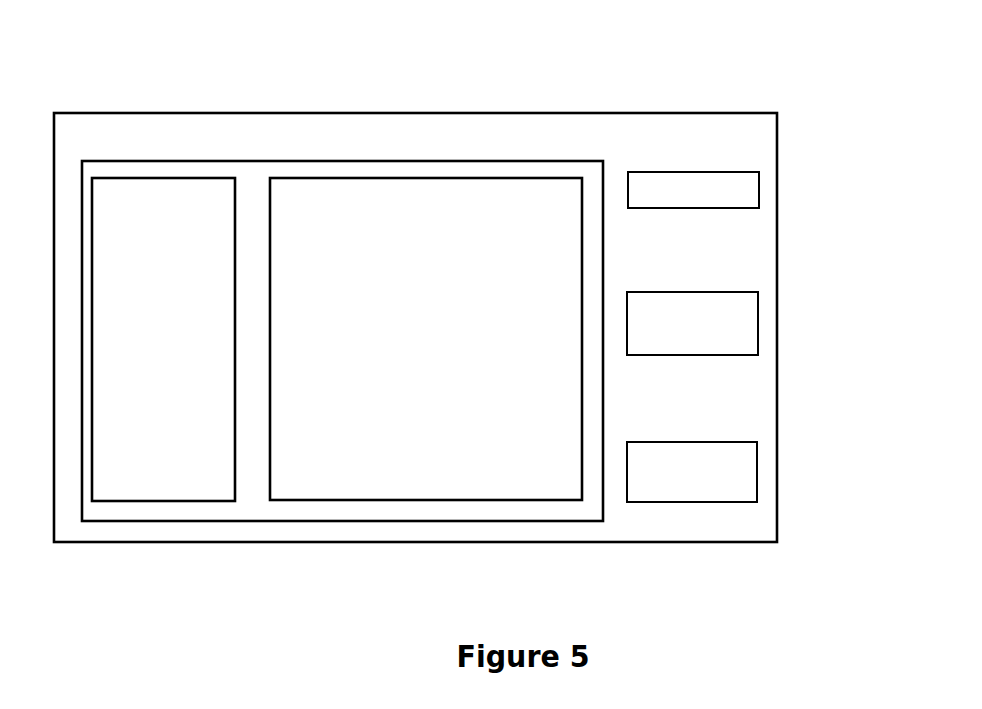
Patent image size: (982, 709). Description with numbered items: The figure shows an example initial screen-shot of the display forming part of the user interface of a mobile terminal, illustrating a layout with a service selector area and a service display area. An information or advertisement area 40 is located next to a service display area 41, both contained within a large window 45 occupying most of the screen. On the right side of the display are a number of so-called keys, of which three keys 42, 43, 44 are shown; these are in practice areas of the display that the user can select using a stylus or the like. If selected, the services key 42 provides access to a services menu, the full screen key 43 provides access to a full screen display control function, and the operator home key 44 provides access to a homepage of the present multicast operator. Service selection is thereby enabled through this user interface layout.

The information or advertisement area 40 is at (195, 465).
The service display area 41 is at (502, 467).
The services key 42 is at (747, 196).
The full screen key 43 is at (713, 355).
The operator home key 44 is at (715, 503).
The large window 45 is at (383, 167).